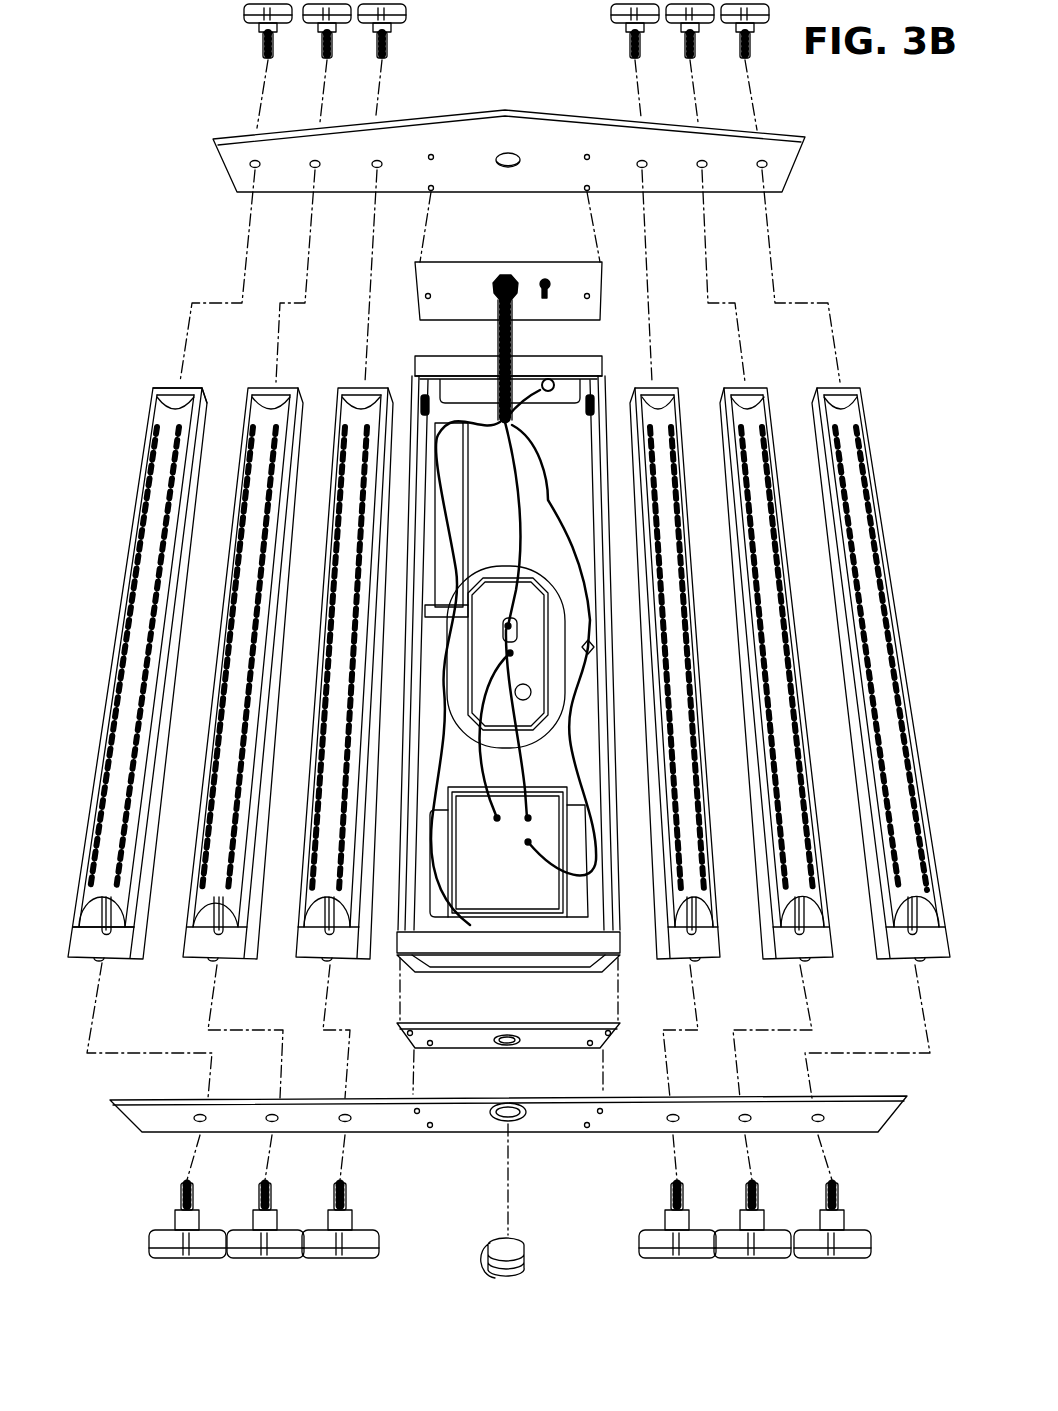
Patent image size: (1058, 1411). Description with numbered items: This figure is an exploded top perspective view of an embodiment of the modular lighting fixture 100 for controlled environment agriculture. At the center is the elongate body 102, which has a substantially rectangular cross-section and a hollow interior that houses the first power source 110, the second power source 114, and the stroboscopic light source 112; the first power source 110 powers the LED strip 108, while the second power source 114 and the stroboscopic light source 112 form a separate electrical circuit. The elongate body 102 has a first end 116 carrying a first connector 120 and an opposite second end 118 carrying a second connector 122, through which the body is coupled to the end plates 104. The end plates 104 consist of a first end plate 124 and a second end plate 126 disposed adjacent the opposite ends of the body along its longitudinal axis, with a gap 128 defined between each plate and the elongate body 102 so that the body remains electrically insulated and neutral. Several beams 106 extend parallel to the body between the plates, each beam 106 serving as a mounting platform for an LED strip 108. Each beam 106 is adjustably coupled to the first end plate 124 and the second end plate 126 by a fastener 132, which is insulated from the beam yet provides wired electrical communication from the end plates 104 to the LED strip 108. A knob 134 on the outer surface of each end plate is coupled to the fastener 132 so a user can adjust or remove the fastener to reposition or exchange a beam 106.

The modular lighting fixture 100 is at (100, 150).
The elongate body 102 is at (458, 946).
The end plates 104 is at (321, 150).
The beam 106 is at (158, 390).
The LED strip 108 is at (160, 483).
The first power source 110 is at (445, 492).
The stroboscopic light source 112 is at (500, 900).
The second power source 114 is at (520, 612).
The first end 116 is at (70, 895).
The second end 118 is at (118, 437).
The first connector 120 is at (530, 1255).
The second connector 122 is at (506, 276).
The first end plate 124 is at (140, 1120).
The second end plate 126 is at (404, 138).
The gap 128 is at (550, 1048).
The fastener 132 is at (628, 50).
The knob 134 is at (868, 1242).